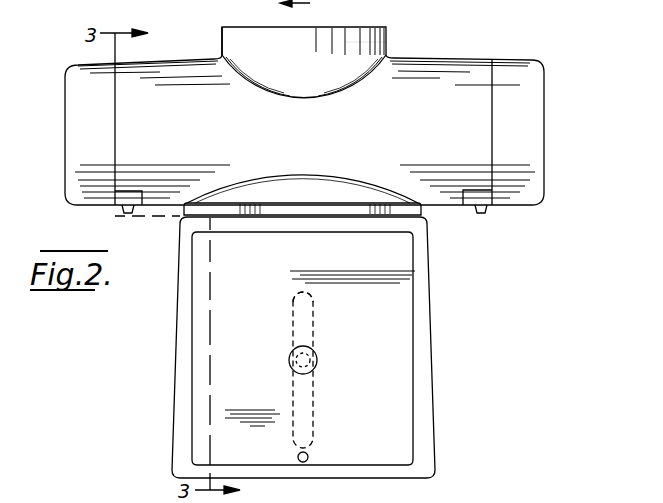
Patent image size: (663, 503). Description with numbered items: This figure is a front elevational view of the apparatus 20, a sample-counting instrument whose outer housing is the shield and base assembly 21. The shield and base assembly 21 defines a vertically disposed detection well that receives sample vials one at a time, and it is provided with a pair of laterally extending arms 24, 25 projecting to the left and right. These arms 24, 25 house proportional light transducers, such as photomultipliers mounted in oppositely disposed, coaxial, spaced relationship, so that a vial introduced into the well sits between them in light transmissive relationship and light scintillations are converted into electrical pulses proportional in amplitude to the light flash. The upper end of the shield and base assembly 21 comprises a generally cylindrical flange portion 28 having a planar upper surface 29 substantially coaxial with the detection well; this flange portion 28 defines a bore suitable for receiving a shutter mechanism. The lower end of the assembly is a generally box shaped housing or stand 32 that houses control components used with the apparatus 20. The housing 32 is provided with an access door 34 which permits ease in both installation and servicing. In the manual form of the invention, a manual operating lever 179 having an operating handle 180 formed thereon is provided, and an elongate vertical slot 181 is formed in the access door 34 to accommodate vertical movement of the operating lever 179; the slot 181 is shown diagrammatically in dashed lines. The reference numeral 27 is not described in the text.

The apparatus 20 is at (349, 107).
The shield and base assembly 21 is at (380, 115).
The laterally extending arm 24 is at (133, 126).
The laterally extending arm 25 is at (475, 137).
The direction arrow 27 is at (320, 28).
The cylindrical flange portion 28 is at (345, 42).
The planar upper surface 29 is at (240, 27).
The housing or stand 32 is at (464, 388).
The access door 34 is at (398, 345).
The manual operating lever 179 is at (305, 408).
The operating handle 180 is at (317, 359).
The elongate vertical slot 181 is at (310, 328).